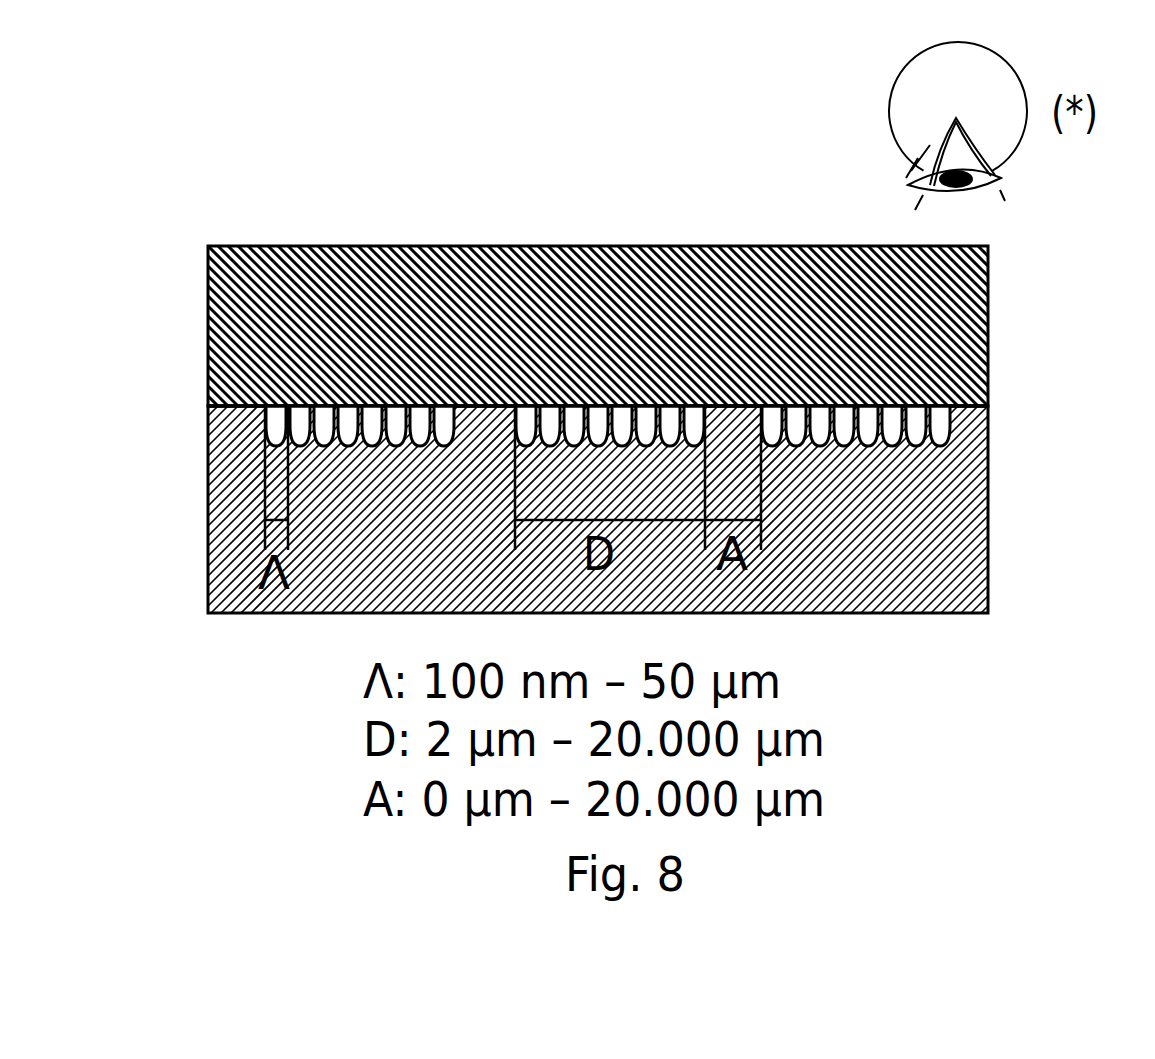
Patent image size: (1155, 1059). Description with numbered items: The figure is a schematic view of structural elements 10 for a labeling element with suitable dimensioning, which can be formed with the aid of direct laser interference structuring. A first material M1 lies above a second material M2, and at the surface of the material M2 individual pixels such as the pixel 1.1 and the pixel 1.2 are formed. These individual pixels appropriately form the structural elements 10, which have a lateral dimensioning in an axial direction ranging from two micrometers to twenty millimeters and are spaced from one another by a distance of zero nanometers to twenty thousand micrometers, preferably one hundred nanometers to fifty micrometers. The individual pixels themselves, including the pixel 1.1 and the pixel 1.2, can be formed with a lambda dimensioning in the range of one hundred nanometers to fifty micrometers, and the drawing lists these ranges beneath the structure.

The structural elements 10 is at (655, 377).
The pixel 1.1 is at (933, 422).
The pixel 1.2 is at (908, 436).
The first material layer M1 is at (648, 326).
The material M2 is at (650, 509).